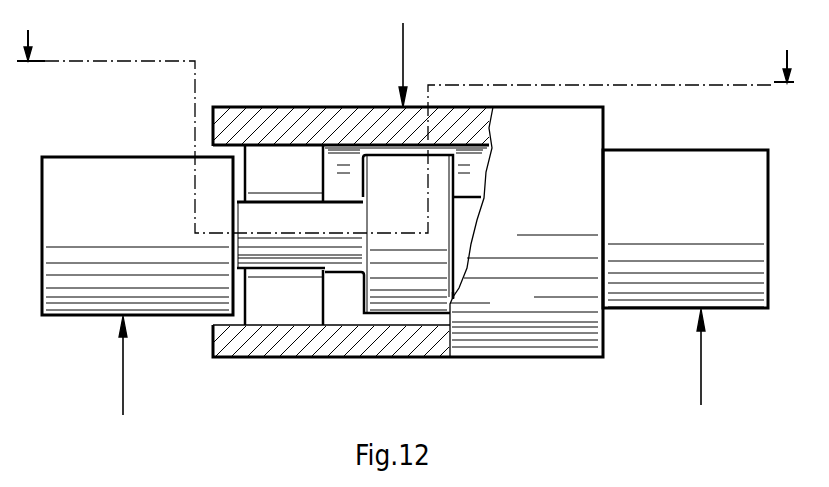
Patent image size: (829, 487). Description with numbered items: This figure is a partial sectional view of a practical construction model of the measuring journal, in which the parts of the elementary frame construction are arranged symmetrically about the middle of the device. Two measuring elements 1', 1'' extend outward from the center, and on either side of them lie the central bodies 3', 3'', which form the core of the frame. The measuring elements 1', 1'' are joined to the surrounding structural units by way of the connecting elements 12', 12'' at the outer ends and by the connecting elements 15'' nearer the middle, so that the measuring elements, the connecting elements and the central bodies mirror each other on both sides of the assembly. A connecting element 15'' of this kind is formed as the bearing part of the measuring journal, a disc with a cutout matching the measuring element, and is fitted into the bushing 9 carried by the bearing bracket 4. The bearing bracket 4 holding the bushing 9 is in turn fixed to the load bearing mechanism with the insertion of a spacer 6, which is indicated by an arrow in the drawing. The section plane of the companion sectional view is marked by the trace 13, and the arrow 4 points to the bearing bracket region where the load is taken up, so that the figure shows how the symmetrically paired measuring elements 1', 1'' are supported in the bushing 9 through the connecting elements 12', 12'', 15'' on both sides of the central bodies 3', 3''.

The section line 13- 13 is at (405, 131).
The bushing 9 is at (243, 126).
The bearing bracket 4 is at (403, 46).
The connecting element 12'' is at (137, 269).
The connecting element 12' is at (685, 214).
The measuring element 1'' is at (300, 300).
The measuring element 1' is at (438, 234).
The central body 3'' is at (481, 302).
The central body 3' is at (481, 302).
The connecting element 15'' is at (245, 313).
The spacer 6 is at (701, 393).